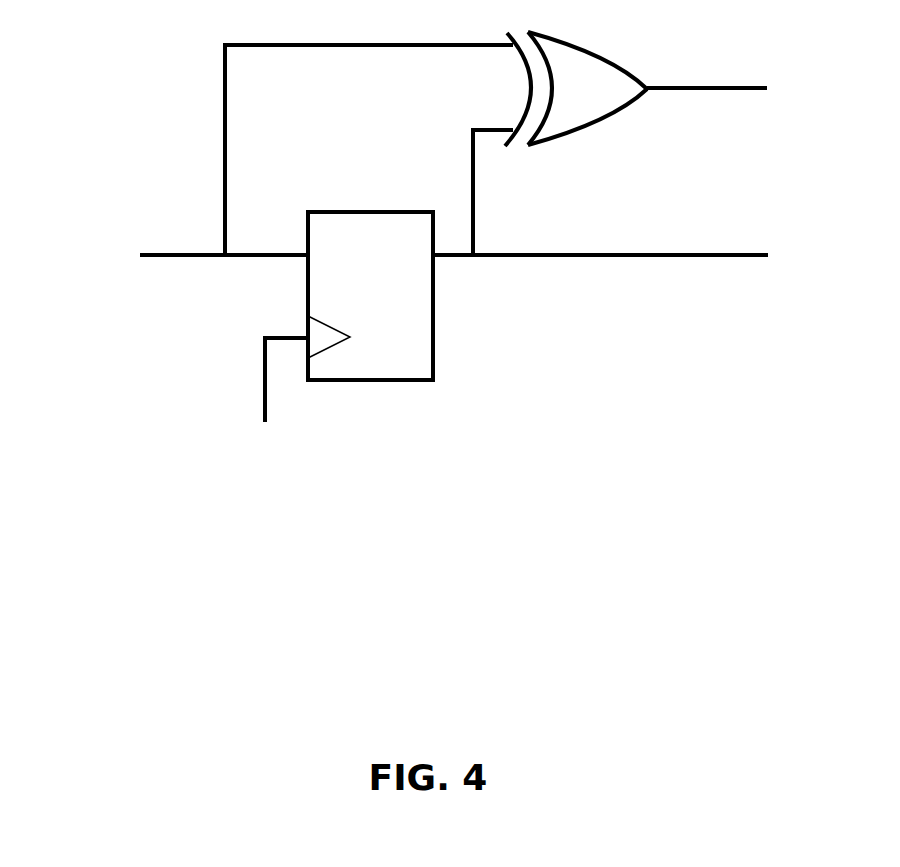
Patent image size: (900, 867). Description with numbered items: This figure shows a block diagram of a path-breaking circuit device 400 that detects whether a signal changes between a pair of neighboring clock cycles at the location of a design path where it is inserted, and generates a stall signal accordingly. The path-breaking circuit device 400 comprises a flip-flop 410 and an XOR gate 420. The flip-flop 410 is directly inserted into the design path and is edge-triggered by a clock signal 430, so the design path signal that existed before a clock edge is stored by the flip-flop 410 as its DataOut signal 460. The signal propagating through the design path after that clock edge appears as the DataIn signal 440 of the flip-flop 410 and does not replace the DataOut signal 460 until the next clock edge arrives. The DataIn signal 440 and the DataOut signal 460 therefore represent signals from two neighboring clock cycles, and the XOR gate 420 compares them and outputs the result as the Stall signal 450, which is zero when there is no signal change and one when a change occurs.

The path-breaking circuit device 400 is at (163, 535).
The flip-flop 410 is at (370, 296).
The XOR gate 420 is at (436, 143).
The clock signal 430 is at (301, 418).
The DataIn signal 440 is at (180, 236).
The Stall signal 450 is at (734, 69).
The DataOut signal 460 is at (653, 243).